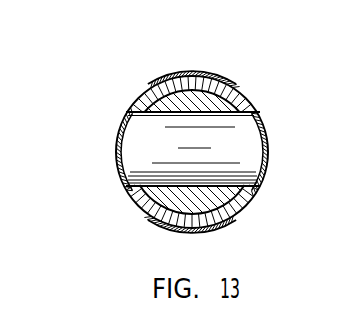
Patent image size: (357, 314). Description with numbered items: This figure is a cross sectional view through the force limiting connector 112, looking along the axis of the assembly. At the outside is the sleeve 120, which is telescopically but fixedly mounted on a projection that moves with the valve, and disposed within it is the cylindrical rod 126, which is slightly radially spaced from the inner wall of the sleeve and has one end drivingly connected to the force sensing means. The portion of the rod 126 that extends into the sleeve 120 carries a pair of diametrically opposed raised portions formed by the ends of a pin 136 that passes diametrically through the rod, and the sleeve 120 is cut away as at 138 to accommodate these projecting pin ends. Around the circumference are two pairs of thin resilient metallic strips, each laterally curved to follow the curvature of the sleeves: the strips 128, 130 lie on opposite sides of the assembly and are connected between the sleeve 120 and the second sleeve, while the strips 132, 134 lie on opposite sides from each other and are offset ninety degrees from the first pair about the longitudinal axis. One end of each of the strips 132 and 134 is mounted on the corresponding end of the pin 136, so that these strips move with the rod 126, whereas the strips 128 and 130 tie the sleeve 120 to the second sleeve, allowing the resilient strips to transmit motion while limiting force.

The force limiting connector 112 is at (177, 150).
The sleeve 120 is at (243, 92).
The cylindrical rod 126 is at (240, 194).
The thin resilient metallic strip 128 is at (189, 72).
The thin resilient metallic strip 130 is at (192, 229).
The thin resilient metallic strip 132 is at (116, 151).
The thin resilient metallic strip 134 is at (268, 152).
The pin 136 is at (193, 152).
The cut away 138 is at (143, 106).